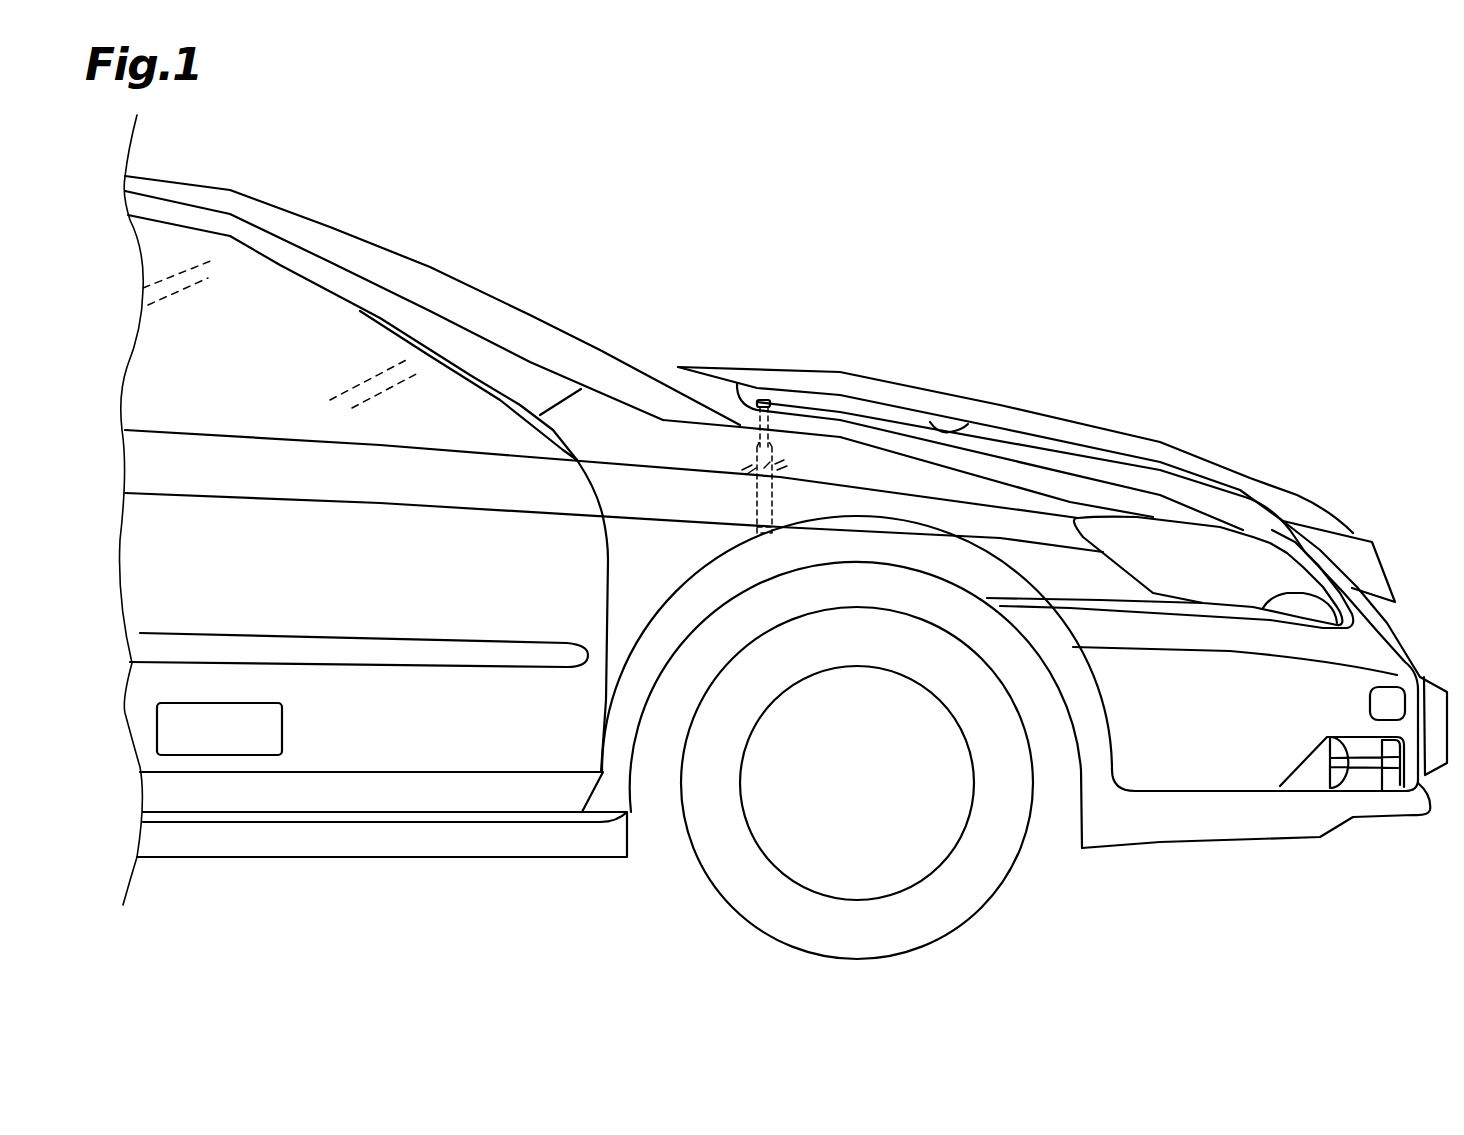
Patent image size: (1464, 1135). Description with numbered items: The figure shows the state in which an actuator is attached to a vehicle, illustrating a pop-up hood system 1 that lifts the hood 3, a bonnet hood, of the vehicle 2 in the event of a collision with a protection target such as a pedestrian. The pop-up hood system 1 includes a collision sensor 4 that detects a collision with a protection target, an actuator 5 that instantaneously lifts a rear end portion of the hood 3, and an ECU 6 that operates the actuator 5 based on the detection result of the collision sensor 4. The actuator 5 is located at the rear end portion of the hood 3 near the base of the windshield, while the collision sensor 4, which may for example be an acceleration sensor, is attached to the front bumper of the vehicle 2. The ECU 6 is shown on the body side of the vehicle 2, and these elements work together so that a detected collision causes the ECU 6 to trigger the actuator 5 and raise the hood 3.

The pop-up hood system 1 is at (784, 537).
The vehicle 2 is at (463, 285).
The hood 3 is at (958, 395).
The collision sensor 4 is at (1385, 687).
The actuator 5 is at (742, 398).
The ECU 6 is at (245, 703).